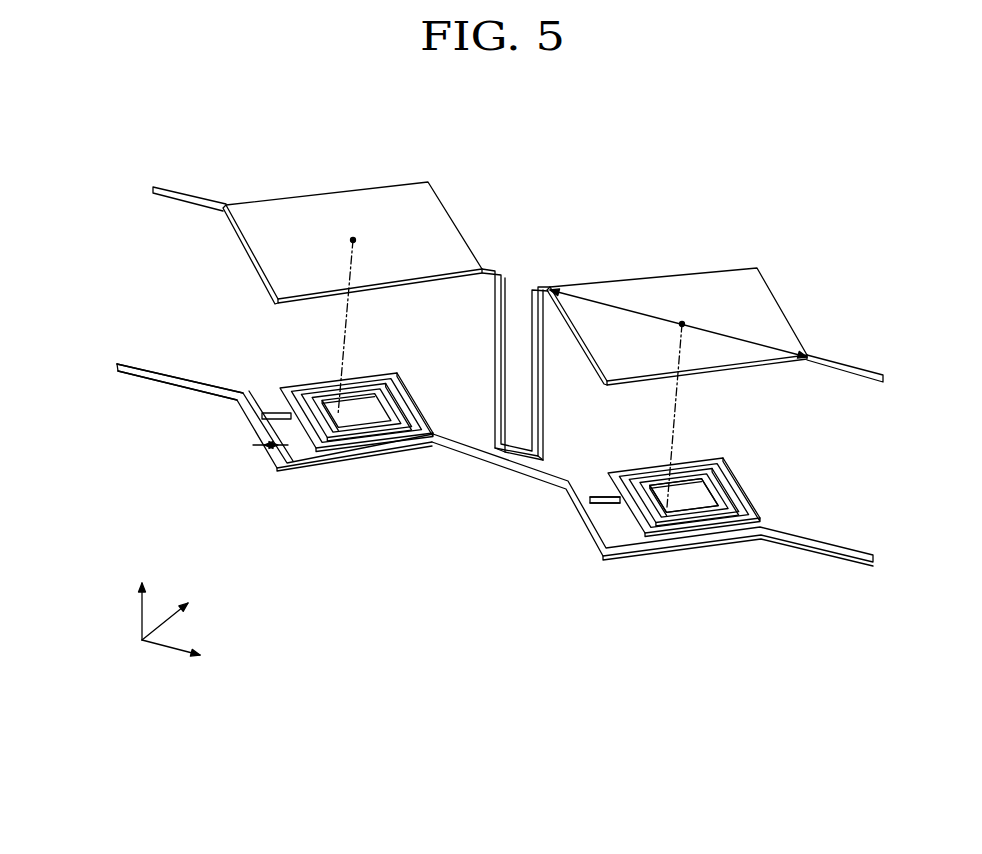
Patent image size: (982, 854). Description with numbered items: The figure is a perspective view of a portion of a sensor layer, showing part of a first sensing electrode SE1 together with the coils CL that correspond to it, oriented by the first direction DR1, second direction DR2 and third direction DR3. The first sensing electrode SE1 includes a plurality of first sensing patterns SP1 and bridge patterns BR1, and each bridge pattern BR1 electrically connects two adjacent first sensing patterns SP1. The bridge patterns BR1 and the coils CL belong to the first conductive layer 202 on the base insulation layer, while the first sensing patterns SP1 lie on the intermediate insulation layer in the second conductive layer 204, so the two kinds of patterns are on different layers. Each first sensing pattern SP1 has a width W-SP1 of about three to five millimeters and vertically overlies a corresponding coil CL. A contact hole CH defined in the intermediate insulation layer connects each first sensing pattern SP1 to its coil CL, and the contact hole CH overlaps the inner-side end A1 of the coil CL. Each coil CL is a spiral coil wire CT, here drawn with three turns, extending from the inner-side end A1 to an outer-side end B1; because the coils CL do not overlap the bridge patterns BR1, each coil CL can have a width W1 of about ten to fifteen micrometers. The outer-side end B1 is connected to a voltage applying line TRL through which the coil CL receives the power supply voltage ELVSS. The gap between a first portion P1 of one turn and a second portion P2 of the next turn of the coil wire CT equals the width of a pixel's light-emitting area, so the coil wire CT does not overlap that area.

The second conductive layer 204 is at (162, 186).
The first conductive layer 202 is at (133, 362).
The first sensing pattern SP1 is at (443, 227).
The width of first sensing pattern W-SP1 is at (640, 312).
The bridge pattern BR1 is at (517, 443).
The contact hole CH is at (347, 333).
The power supply voltage ELVSS is at (237, 414).
The outer-side end B1 is at (275, 412).
The inner-side end A1 is at (338, 420).
The width of coil W1 is at (256, 445).
The first portion P1 is at (643, 492).
The second portion P2 is at (628, 497).
The coil wire CT is at (693, 462).
The coil CL is at (745, 482).
The voltage applying line TRL is at (837, 553).
The first sensing electrode SE1 is at (798, 718).
The first direction DR1 is at (192, 654).
The second direction DR2 is at (187, 611).
The third direction DR3 is at (139, 597).